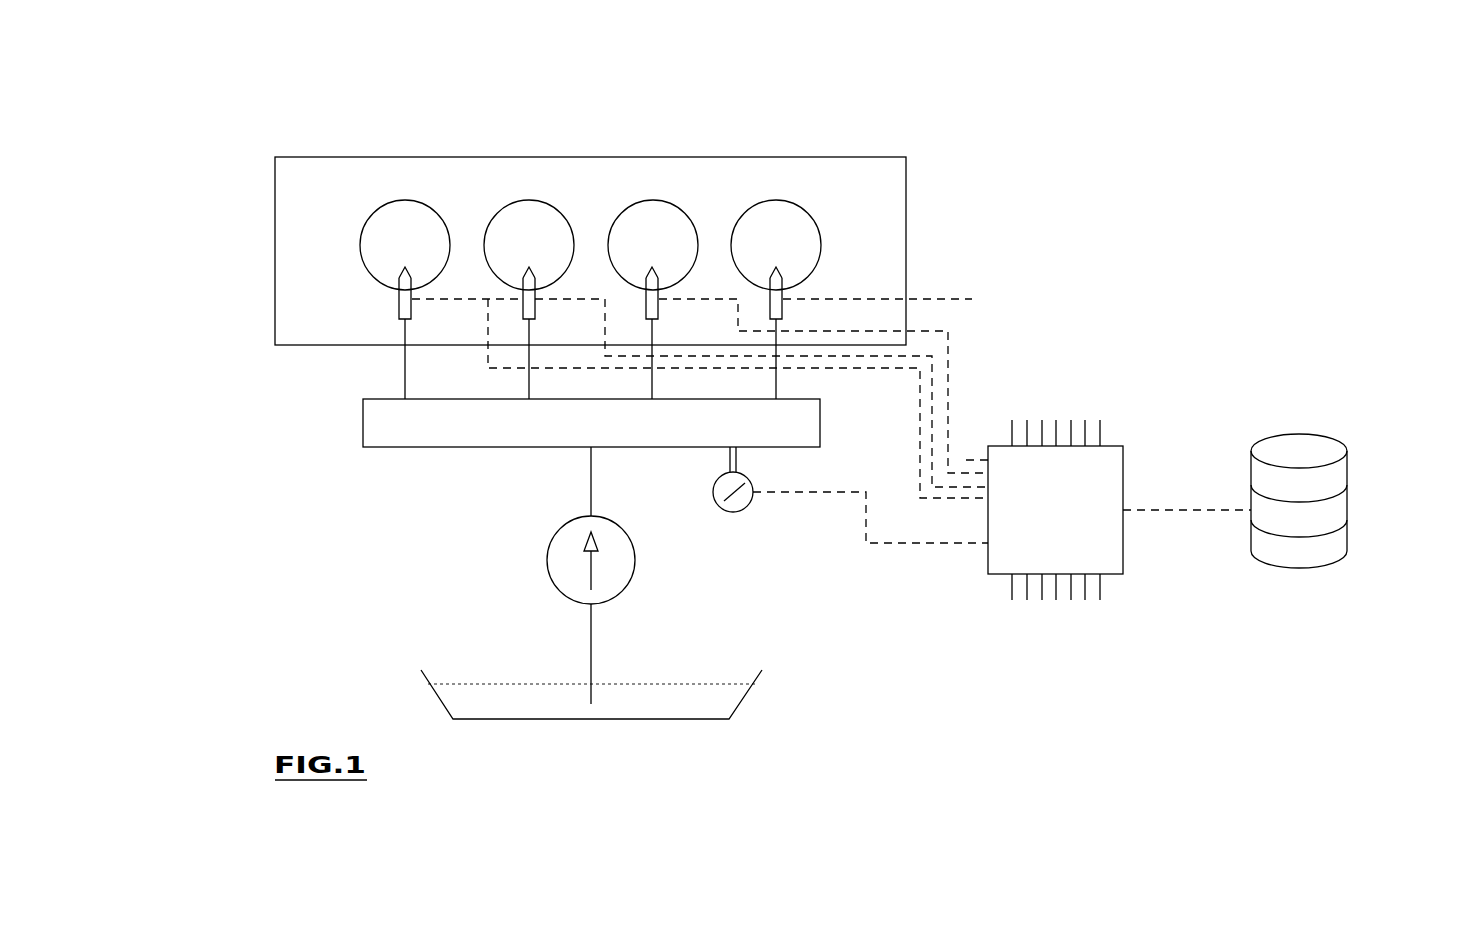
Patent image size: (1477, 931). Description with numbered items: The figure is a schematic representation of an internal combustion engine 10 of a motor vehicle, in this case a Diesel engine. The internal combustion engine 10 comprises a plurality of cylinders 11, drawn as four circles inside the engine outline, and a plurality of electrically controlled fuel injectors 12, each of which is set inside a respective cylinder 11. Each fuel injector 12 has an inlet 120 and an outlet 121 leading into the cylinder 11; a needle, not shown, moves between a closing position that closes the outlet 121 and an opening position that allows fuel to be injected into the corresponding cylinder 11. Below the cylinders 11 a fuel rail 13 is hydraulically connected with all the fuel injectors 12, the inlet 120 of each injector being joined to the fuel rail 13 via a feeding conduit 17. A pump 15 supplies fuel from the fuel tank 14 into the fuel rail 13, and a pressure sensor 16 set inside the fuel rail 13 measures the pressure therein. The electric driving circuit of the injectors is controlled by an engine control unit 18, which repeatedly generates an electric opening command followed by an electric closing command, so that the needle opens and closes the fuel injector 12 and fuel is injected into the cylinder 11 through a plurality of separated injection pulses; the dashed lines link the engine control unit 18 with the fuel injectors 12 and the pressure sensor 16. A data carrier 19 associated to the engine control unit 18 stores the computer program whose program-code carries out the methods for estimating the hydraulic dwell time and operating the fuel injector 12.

The internal combustion engine 10 is at (525, 186).
The cylinder 11 is at (415, 222).
The fuel injector 12 is at (528, 268).
The outlet 121 is at (405, 266).
The inlet 120 is at (403, 318).
The feeding conduit 17 is at (404, 372).
The fuel rail 13 is at (418, 443).
The fuel tank 14 is at (553, 722).
The pump 15 is at (550, 537).
The pressure sensor 16 is at (733, 513).
The engine control unit 18 is at (1068, 525).
The data carrier 19 is at (1338, 512).